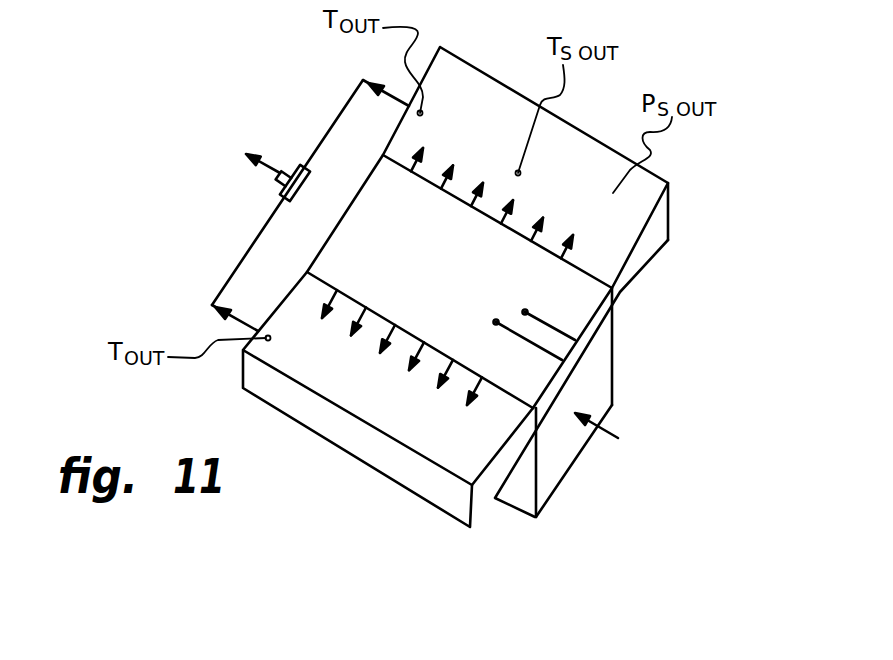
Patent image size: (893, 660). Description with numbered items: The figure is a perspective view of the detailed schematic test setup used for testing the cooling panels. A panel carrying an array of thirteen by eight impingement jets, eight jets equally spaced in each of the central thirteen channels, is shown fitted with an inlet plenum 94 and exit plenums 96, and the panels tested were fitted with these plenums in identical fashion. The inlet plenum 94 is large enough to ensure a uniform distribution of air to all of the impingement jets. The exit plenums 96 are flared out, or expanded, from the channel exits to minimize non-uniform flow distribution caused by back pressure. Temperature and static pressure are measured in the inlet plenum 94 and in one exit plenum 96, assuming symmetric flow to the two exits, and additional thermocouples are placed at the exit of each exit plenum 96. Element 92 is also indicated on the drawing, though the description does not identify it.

The heat source / hot side plate 92 is at (668, 220).
The inlet plenum 94 is at (562, 463).
The exit plenum 96 is at (475, 507).